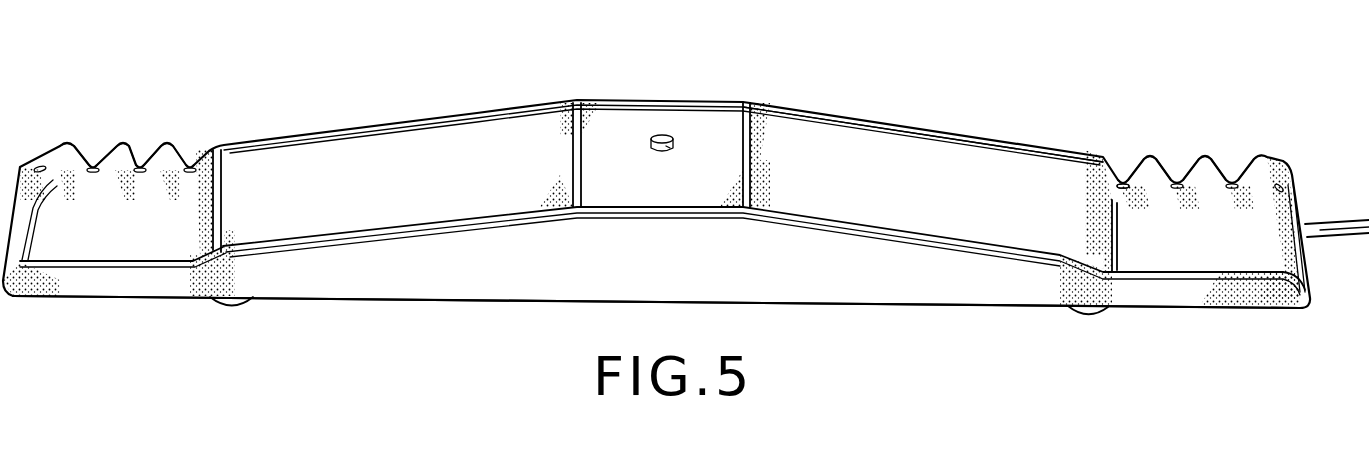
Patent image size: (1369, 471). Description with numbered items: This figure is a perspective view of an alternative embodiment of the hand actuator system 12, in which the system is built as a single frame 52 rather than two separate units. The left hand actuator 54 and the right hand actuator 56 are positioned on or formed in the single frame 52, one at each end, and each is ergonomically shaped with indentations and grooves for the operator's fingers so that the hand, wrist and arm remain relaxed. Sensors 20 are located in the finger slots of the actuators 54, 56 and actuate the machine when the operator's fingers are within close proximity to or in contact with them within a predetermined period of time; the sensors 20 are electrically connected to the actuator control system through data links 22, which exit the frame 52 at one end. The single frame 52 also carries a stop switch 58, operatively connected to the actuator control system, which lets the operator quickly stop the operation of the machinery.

The hand actuator system 12 is at (470, 323).
The sensors 20 is at (40, 167).
The data links 22 is at (1333, 227).
The single frame 52 is at (857, 160).
The left hand actuator 54 is at (127, 135).
The right hand actuator 56 is at (1213, 143).
The stop switch 58 is at (662, 134).